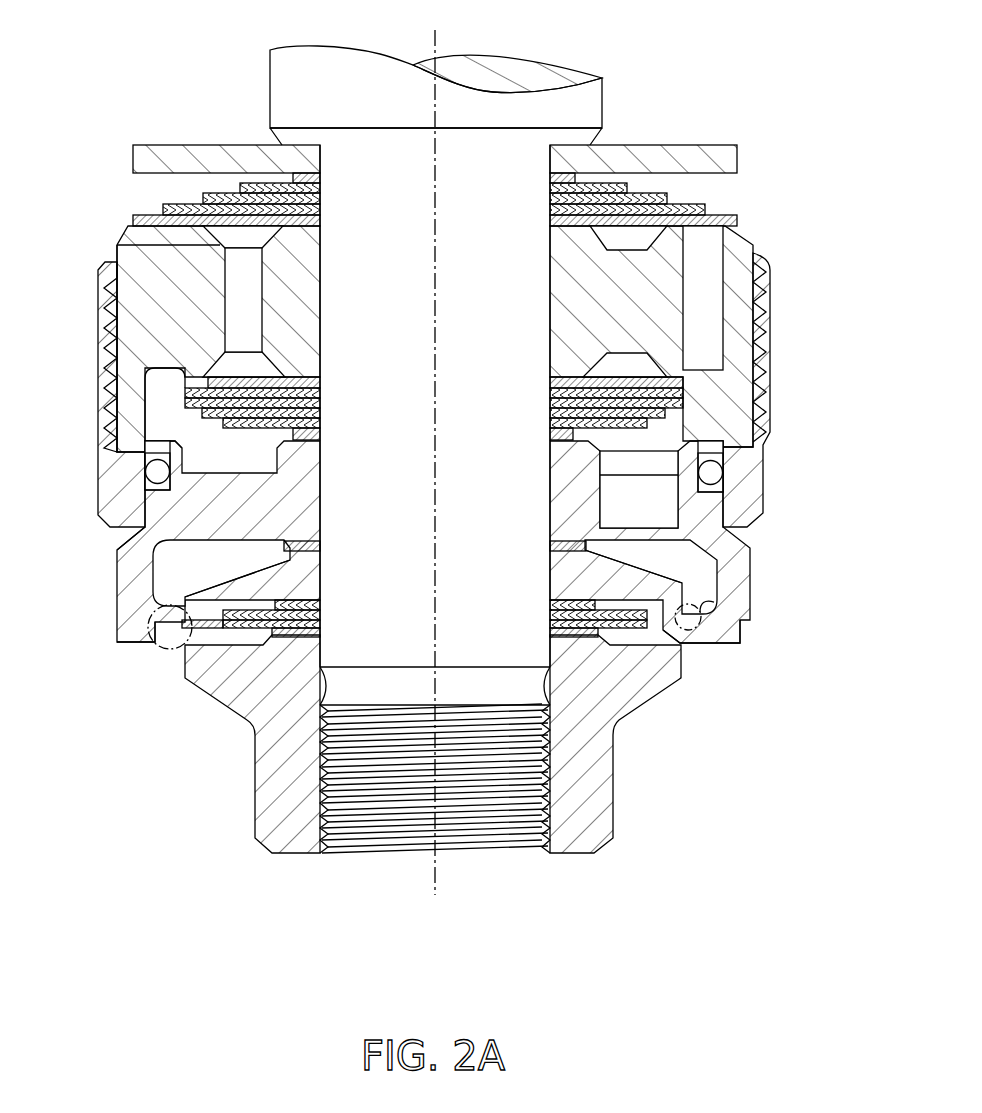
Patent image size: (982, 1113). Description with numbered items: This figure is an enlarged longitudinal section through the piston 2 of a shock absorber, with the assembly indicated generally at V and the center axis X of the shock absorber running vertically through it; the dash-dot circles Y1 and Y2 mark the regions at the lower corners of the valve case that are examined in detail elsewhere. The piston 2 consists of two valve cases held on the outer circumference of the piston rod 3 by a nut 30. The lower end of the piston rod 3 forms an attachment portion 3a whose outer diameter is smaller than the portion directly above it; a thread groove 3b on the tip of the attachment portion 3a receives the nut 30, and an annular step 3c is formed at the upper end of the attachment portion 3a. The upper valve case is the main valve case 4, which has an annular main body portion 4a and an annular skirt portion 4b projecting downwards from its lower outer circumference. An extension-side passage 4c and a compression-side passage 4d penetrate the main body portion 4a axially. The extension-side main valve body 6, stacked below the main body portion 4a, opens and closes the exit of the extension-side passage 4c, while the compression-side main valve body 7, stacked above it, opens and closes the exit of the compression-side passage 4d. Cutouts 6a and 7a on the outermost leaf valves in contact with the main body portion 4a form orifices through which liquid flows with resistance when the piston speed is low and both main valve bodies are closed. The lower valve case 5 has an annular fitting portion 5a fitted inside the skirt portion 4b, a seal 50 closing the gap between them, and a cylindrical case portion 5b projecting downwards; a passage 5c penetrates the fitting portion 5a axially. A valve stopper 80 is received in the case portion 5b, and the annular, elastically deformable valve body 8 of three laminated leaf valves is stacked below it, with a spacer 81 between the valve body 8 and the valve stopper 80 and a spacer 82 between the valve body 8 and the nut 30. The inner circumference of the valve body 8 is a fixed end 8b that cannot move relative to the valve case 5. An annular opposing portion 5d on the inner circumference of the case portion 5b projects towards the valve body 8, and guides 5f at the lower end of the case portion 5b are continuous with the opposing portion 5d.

The piston 2 is at (104, 512).
The piston rod 3 is at (609, 96).
The attachment portion 3a is at (321, 326).
The thread groove 3b is at (466, 836).
The annular step 3c is at (300, 160).
The main valve case 4 is at (752, 247).
The main body portion 4a is at (113, 326).
The skirt portion 4b is at (763, 483).
The extension-side passage 4c is at (240, 283).
The compression-side passage 4d is at (705, 305).
The valve case 5 is at (756, 565).
The fitting portion 5a is at (155, 444).
The case portion 5b is at (135, 592).
The passage 5c is at (650, 511).
The opposing portion 5d is at (706, 604).
The guides 5f is at (130, 642).
The extension-side main valve body 6 is at (176, 403).
The cutout 6a is at (185, 383).
The compression-side main valve body 7 is at (700, 194).
The cutout 7a is at (737, 222).
The valve body 8 is at (207, 626).
The fixed end 8b is at (560, 615).
The nut 30 is at (253, 792).
The seal 50 is at (722, 466).
The valve stopper 80 is at (158, 560).
The spacer 81 is at (300, 592).
The spacer 82 is at (321, 633).
The valve assembly V is at (130, 137).
The center axis X is at (432, 448).
The detail region Y1 is at (692, 632).
The detail region Y2 is at (164, 650).